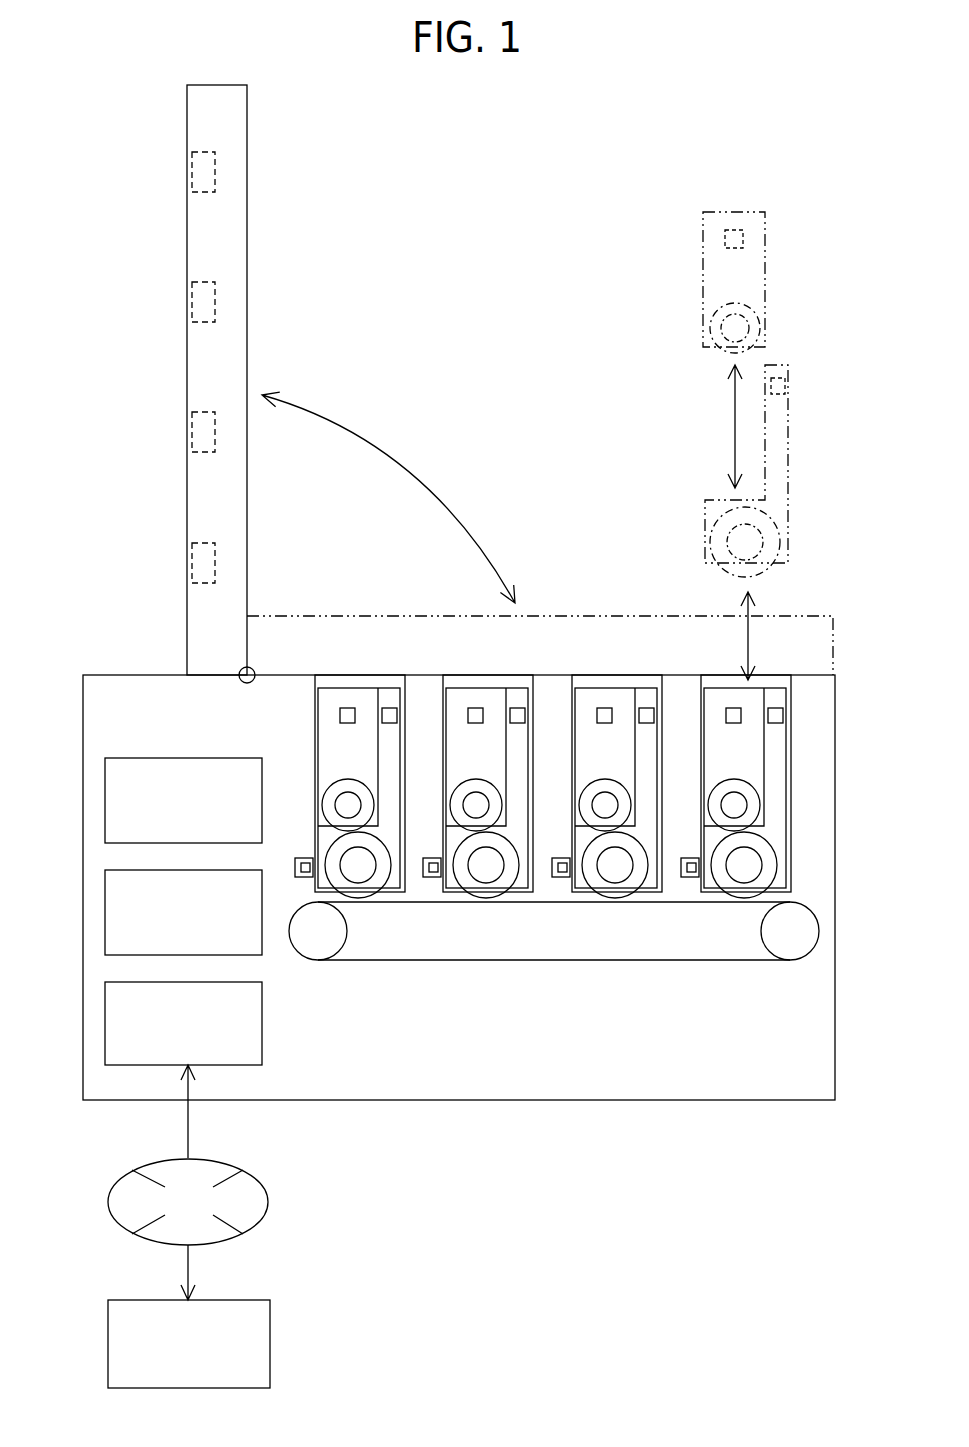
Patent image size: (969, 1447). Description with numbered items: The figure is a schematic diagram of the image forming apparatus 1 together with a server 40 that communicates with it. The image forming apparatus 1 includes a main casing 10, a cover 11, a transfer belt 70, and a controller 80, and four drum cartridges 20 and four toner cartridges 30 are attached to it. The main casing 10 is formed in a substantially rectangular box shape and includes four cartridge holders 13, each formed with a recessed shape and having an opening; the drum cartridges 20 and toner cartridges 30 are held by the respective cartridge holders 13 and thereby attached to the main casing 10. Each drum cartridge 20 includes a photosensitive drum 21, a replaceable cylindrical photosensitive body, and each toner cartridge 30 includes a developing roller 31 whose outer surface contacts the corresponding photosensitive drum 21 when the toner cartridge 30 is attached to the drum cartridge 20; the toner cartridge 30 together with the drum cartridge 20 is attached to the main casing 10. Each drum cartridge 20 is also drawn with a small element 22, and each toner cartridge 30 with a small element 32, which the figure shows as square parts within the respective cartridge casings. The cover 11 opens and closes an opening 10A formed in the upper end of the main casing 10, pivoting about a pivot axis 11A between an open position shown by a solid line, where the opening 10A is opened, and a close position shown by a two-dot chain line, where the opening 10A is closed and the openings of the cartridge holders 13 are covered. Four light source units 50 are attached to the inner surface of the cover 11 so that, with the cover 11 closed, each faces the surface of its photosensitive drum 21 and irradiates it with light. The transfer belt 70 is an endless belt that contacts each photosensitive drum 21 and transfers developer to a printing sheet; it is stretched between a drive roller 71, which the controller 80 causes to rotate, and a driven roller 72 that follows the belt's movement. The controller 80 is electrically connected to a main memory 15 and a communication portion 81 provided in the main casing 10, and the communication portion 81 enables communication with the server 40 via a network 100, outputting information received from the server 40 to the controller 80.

The image forming apparatus 1 is at (677, 111).
The main casing 10 is at (836, 982).
The opening 10A is at (812, 674).
The cover 11 is at (192, 370).
The pivot axis 11A is at (253, 668).
The cartridge holder 13 is at (318, 686).
The main memory 15 is at (105, 803).
The drum cartridge 20 is at (800, 440).
The photosensitive drum 21 is at (775, 865).
The drum memory 22 is at (649, 708).
The toner cartridge 30 is at (775, 228).
The developing roller 31 is at (758, 805).
The developing memory 32 is at (606, 708).
The server 40 is at (235, 1300).
The light source unit 50 is at (215, 172).
The transfer belt 70 is at (555, 960).
The drive roller 71 is at (318, 950).
The driven roller 72 is at (790, 950).
The controller 80 is at (105, 915).
The communication portion 81 is at (105, 1027).
The network 100 is at (233, 1168).